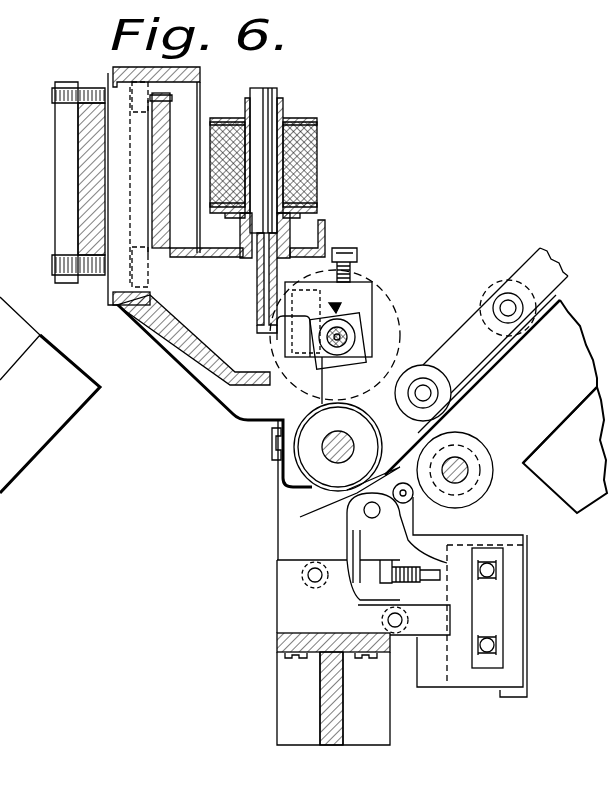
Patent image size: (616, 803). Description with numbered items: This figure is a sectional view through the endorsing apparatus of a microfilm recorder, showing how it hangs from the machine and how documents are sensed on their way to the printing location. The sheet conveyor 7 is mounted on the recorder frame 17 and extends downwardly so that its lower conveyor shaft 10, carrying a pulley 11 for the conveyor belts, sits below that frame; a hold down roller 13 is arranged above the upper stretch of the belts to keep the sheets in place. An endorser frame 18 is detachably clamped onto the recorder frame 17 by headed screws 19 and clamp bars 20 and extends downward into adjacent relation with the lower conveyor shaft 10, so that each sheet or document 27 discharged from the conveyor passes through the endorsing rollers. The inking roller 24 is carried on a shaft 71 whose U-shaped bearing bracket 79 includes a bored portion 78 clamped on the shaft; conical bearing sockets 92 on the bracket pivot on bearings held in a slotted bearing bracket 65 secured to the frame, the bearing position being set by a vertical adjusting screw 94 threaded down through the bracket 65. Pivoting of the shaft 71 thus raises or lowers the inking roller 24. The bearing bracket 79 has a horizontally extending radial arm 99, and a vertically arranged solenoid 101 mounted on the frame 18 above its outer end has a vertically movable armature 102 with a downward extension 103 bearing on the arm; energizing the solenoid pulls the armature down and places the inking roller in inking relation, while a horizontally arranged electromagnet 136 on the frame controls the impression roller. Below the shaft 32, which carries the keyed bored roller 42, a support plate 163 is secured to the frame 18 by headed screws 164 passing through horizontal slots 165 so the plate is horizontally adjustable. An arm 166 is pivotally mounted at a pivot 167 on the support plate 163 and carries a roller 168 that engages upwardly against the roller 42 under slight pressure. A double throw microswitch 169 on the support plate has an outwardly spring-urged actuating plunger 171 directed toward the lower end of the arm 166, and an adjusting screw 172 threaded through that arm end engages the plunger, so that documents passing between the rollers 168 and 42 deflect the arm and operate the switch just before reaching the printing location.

The conveyor 7 is at (576, 428).
The lower conveyor shaft 10 is at (462, 463).
The pulley 11 is at (478, 488).
The hold down roller 13 is at (412, 367).
The recorder frame 17 is at (90, 148).
The endorser frame 18 is at (232, 398).
The headed screw 19 is at (100, 83).
The clamp bar 20 is at (62, 185).
The inking roller 24 is at (388, 278).
The sheet or document 27 is at (402, 457).
The shaft 32 is at (350, 437).
The bored roller 42 is at (313, 417).
The bearing bracket 65 is at (362, 278).
The shaft 71 is at (357, 320).
The bored portion 78 is at (363, 338).
The bearing bracket 79 is at (327, 370).
The conical bearing socket 92 is at (352, 360).
The vertical adjusting screw 94 is at (352, 248).
The radial arm 99 is at (290, 336).
The solenoid 101 is at (318, 140).
The armature 102 is at (272, 88).
The downward extension 103 is at (285, 233).
The electromagnet 136 is at (13, 630).
The support plate 163 is at (280, 535).
The headed screw 164 is at (388, 618).
The horizontal slot 165 is at (298, 576).
The arm 166 is at (360, 543).
The pivot 167 is at (406, 504).
The roller 168 is at (340, 492).
The double throw microswitch 169 is at (460, 540).
The actuating plunger 171 is at (450, 585).
The adjusting screw 172 is at (360, 553).